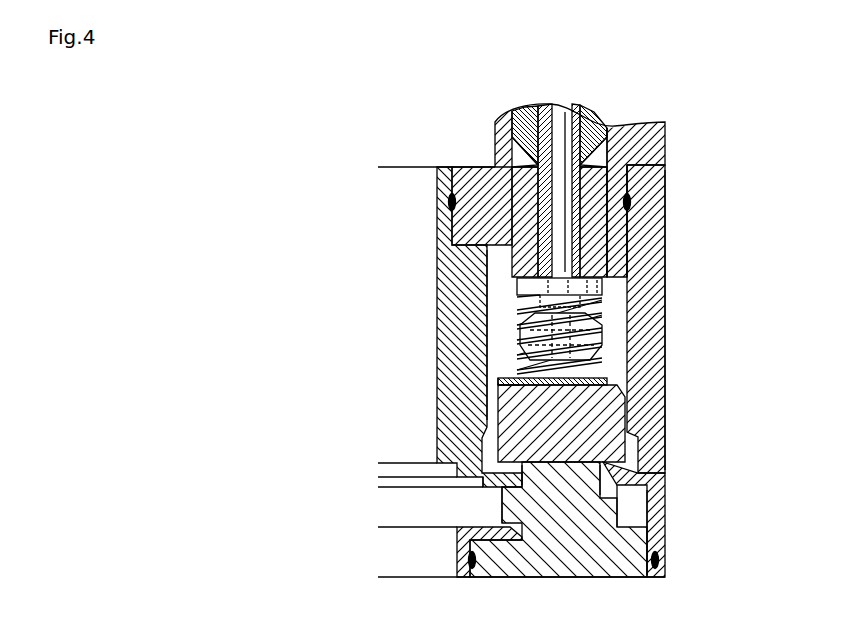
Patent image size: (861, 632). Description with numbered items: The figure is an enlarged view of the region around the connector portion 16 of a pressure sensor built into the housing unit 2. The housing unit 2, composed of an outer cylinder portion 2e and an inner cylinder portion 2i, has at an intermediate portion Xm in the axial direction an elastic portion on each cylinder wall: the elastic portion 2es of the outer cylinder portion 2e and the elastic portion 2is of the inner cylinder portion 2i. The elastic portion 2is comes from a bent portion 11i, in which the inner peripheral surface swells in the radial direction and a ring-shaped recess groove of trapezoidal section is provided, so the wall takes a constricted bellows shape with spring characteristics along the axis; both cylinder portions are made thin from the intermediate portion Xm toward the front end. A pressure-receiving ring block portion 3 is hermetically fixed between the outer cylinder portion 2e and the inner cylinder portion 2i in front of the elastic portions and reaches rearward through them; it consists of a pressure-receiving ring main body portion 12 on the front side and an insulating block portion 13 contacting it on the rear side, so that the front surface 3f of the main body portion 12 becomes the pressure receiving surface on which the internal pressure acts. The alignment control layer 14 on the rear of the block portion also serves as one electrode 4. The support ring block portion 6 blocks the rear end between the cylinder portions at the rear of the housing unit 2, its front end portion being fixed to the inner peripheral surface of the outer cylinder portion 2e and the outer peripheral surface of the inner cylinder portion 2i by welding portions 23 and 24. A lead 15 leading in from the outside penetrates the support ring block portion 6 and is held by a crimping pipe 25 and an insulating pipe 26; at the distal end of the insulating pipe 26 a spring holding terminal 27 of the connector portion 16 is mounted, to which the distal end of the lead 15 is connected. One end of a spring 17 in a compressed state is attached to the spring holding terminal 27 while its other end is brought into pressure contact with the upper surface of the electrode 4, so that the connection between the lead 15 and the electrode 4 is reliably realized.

The housing unit 2 is at (665, 401).
The inner cylinder portion 2i is at (487, 264).
The outer cylinder portion 2e is at (665, 272).
The elastic portion 2is is at (498, 508).
The elastic portion 2es is at (632, 510).
The pressure-receiving ring block portion 3 is at (551, 506).
The front surface 3f is at (476, 578).
The electrode portion 4 is at (500, 380).
The support ring block portion 6 is at (665, 128).
The bent portion 11i is at (498, 490).
The pressure-receiving ring main body portion 12 is at (618, 487).
The insulating block portion 13 is at (496, 405).
The alignment control layer 14 is at (516, 360).
The lead 15 is at (596, 229).
The connector portion 16 is at (552, 331).
The spring 17 is at (614, 379).
The welding portion 23 is at (630, 203).
The welding portion 24 is at (449, 205).
The crimping pipe 25 is at (493, 148).
The insulating pipe 26 is at (463, 168).
The spring holding terminal 27 is at (518, 330).
The intermediate portion Xm is at (672, 502).